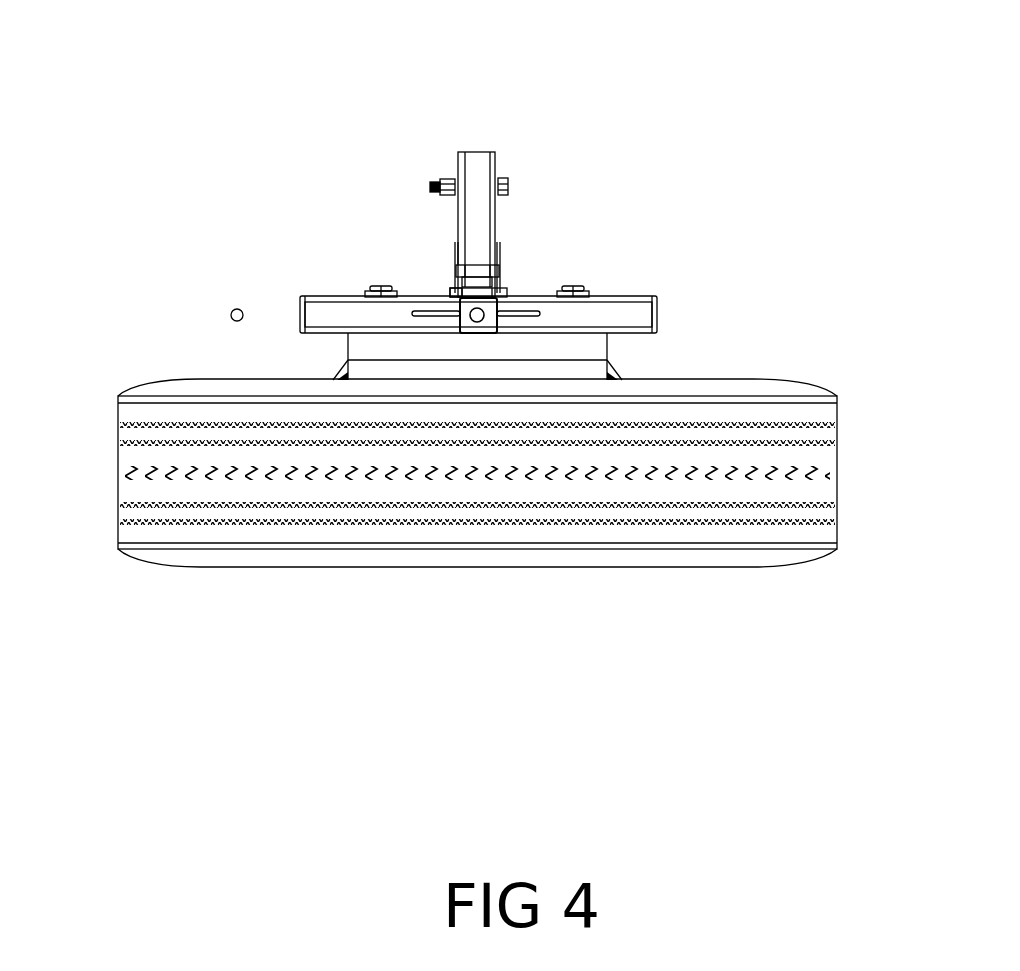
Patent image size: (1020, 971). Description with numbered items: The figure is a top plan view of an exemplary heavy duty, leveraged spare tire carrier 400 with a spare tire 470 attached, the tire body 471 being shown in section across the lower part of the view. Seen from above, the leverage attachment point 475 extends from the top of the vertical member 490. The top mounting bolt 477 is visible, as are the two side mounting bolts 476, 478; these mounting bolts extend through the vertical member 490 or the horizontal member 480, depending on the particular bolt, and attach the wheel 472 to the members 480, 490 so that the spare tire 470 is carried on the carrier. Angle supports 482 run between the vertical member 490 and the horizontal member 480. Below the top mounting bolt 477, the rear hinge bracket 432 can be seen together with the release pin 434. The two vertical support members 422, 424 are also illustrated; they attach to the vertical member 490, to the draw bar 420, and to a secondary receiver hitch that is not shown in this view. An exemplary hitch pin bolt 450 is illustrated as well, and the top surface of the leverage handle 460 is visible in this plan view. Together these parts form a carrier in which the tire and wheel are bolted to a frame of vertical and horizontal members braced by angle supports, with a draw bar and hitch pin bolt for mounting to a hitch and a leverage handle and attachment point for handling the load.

The leveraged spare tire carrier 400 is at (283, 780).
The draw bar 420 is at (468, 152).
The vertical support member 422 is at (463, 287).
The vertical support member 424 is at (500, 260).
The rear hinge bracket 432 is at (370, 288).
The release pin 434 is at (487, 268).
The hitch pin bolt 450 is at (506, 178).
The leverage handle 460 is at (230, 308).
The spare tire 470 is at (492, 600).
The tire 471 is at (330, 548).
The wheel 472 is at (348, 360).
The leverage attachment point 475 is at (493, 303).
The side mounting bolt 476 is at (450, 293).
The top mounting bolt 477 is at (457, 287).
The side mounting bolt 478 is at (588, 287).
The horizontal member 480 is at (652, 300).
The angle support 482 is at (540, 315).
The vertical member 490 is at (478, 318).